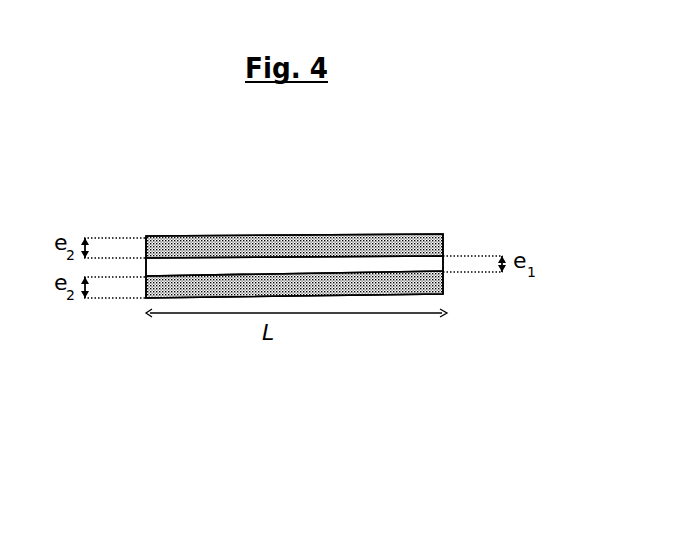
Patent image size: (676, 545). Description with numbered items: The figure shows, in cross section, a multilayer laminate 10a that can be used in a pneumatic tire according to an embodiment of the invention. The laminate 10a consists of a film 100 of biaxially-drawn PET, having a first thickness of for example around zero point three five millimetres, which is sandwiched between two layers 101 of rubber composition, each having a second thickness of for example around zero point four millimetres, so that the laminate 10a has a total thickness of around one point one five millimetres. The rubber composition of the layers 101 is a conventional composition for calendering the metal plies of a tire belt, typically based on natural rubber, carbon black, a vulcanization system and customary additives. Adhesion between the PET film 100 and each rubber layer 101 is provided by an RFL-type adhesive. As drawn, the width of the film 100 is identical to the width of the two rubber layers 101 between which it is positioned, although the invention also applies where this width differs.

The multilayer laminate 10a is at (424, 208).
The layer of rubber composition 101 is at (189, 245).
The film of biaxially-drawn PET 100 is at (307, 260).